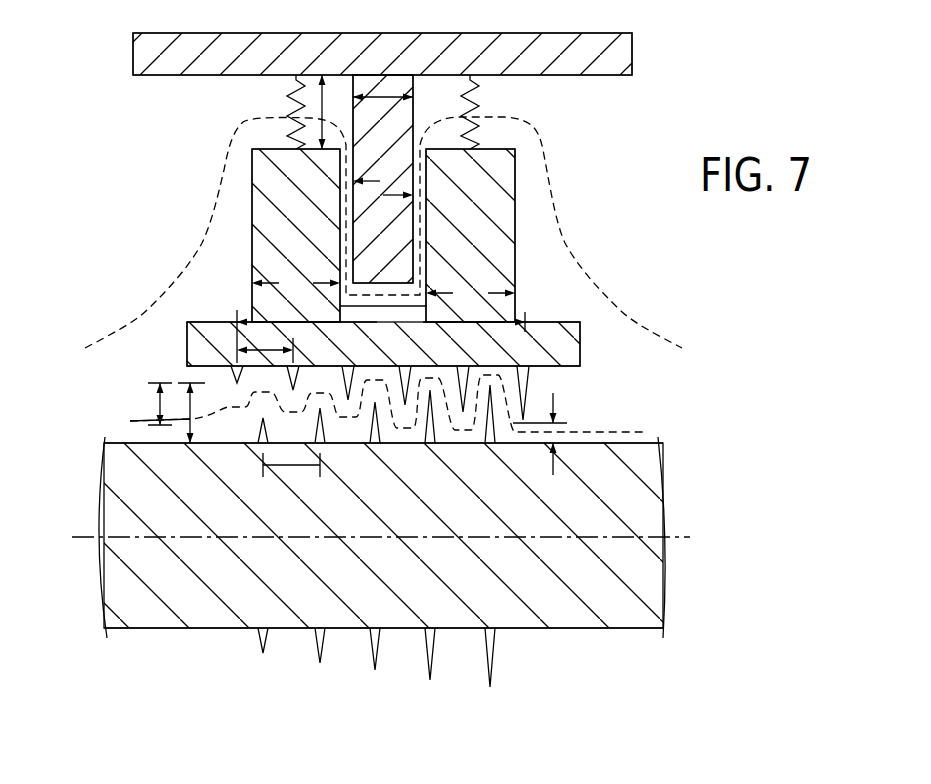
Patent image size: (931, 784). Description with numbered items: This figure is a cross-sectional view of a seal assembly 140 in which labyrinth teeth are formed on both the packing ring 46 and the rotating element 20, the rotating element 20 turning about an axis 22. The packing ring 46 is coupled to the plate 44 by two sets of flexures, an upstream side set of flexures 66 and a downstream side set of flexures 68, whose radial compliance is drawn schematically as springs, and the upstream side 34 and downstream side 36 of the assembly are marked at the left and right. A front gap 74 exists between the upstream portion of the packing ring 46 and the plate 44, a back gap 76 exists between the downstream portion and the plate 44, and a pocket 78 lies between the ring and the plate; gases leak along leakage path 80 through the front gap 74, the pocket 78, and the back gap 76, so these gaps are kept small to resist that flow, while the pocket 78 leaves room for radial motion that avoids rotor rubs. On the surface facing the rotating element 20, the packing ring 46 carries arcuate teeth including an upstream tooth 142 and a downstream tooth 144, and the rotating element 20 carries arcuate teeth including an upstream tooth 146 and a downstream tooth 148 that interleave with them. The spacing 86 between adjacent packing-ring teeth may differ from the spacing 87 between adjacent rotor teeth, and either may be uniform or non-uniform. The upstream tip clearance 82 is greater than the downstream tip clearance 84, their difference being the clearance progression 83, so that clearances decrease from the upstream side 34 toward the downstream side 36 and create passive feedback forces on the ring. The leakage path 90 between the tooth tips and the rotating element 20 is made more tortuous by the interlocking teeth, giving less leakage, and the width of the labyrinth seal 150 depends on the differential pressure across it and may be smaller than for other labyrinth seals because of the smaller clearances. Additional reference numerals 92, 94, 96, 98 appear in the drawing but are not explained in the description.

The rotating element 20 is at (110, 593).
The axis 22 is at (688, 533).
The upstream side 34 is at (124, 262).
The downstream side 36 is at (622, 254).
The plate 44 is at (393, 33).
The packing ring 46 is at (497, 210).
The upstream side set of flexures 66 is at (298, 89).
The downstream side set of flexures 68 is at (472, 97).
The front gap 74 is at (331, 181).
The back gap 76 is at (436, 195).
The pocket 78 is at (371, 301).
The leakage path 80 is at (643, 332).
The upstream tip clearance 82 is at (187, 420).
The clearance progression 83 is at (150, 402).
The downstream tip clearance 84 is at (557, 401).
The spacing 86 is at (266, 349).
The spacing 87 is at (293, 468).
The leakage path 90 is at (647, 432).
The spring height 92 is at (314, 100).
The stem width 94 is at (383, 95).
The first block width 96 is at (296, 284).
The second block width 98 is at (470, 294).
The seal assembly 140 is at (686, 89).
The upstream tooth 142 is at (230, 382).
The downstream tooth 144 is at (530, 384).
The upstream tooth 146 is at (263, 443).
The downstream tooth 148 is at (490, 443).
The width of the labyrinth seal 150 is at (381, 336).